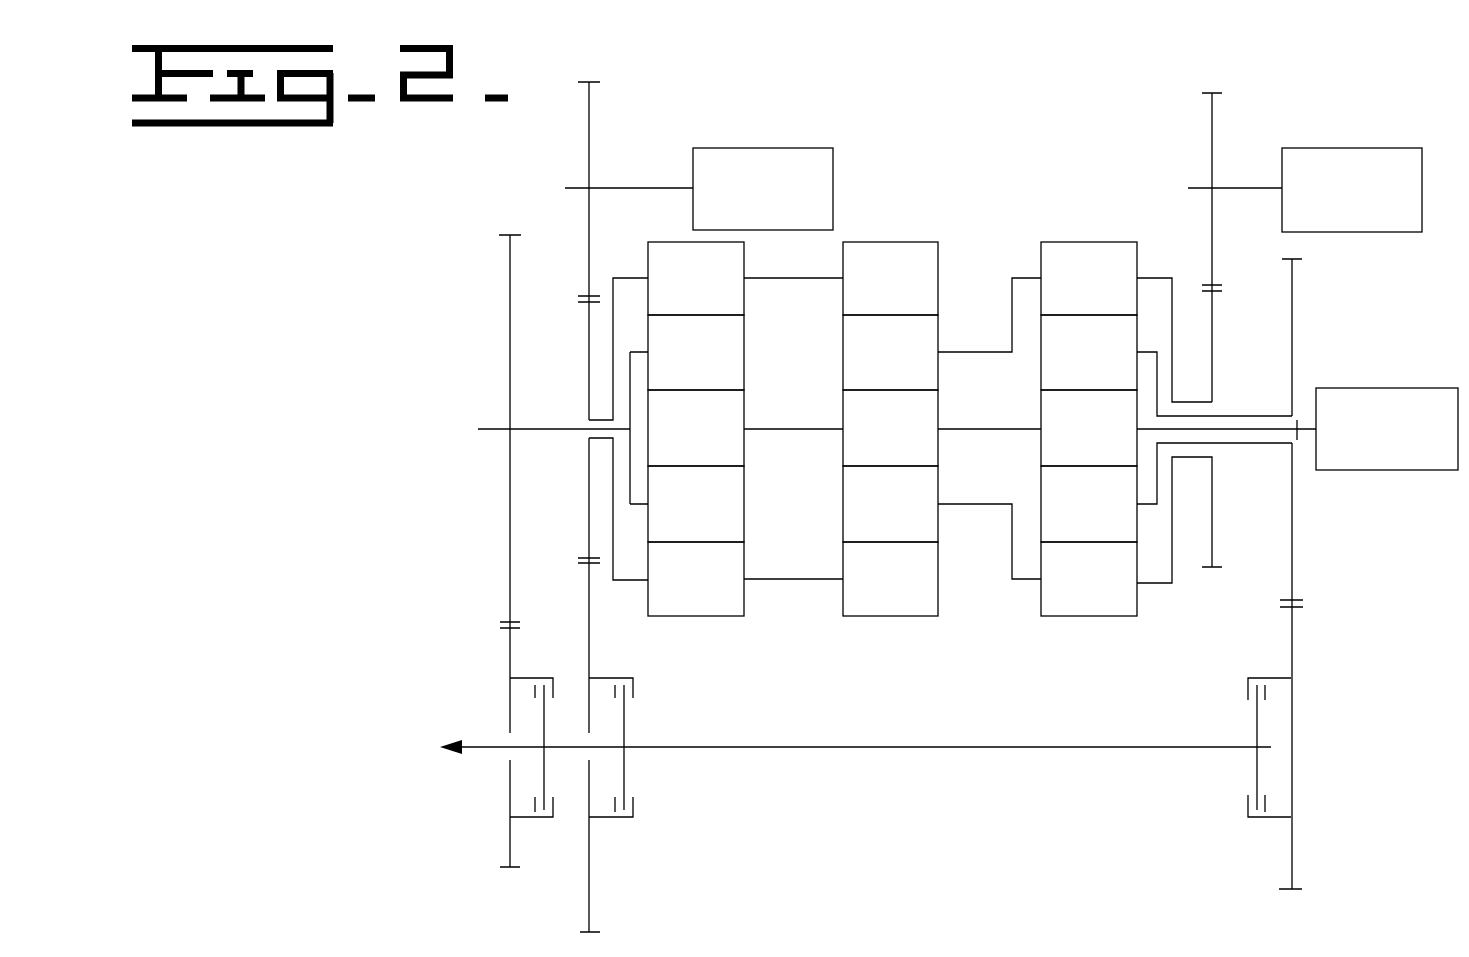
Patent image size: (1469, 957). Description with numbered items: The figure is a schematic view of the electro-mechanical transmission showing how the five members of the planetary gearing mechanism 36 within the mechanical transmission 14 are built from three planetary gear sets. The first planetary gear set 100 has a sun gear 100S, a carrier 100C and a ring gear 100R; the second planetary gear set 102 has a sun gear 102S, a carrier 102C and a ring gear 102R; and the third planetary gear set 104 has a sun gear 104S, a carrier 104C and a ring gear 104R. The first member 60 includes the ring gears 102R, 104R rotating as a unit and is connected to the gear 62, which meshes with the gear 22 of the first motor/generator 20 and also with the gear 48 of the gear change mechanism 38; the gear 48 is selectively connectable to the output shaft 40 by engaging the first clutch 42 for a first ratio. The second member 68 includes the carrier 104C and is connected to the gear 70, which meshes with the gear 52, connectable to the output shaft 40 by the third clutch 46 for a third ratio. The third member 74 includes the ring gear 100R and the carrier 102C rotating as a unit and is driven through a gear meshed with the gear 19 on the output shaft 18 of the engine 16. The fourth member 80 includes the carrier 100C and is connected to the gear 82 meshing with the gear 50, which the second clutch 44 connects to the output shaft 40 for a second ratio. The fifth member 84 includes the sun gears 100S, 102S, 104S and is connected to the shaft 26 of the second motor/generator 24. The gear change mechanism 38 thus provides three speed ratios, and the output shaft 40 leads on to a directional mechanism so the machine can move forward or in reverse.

The mechanical transmission 14 is at (442, 434).
The engine 16 is at (1370, 148).
The output shaft 18 is at (1258, 188).
The gear 19 is at (1212, 125).
The first motor/generator 20 is at (765, 148).
The gear 22 is at (588, 140).
The second motor/generator 24 is at (1383, 388).
The shaft 26 is at (1310, 437).
The planetary gearing mechanism 36 is at (981, 674).
The gear change mechanism 38 is at (836, 845).
The output shaft 40 is at (897, 747).
The first clutch 42 is at (624, 678).
The second clutch 44 is at (1255, 678).
The third clutch 46 is at (543, 678).
The gear 48 is at (590, 903).
The gear 50 is at (1290, 868).
The gear 52 is at (510, 837).
The first member 60 is at (630, 276).
The gear 62 is at (589, 323).
The second member 68 is at (558, 429).
The gear 70 is at (510, 495).
The third member 74 is at (1162, 273).
The fourth member 80 is at (1267, 416).
The gear 82 is at (1290, 583).
The fifth member 84 is at (1267, 443).
The first planetary gear set 100 is at (1037, 453).
The ring gear 100R is at (1109, 241).
The carrier 100C is at (1039, 354).
The sun gear 100S is at (1039, 400).
The second planetary gear set 102 is at (841, 475).
The ring gear 102R is at (842, 548).
The carrier 102C is at (842, 490).
The sun gear 102S is at (842, 440).
The third planetary gear set 104 is at (734, 472).
The ring gear 104R is at (747, 285).
The carrier 104C is at (747, 335).
The sun gear 104S is at (747, 402).